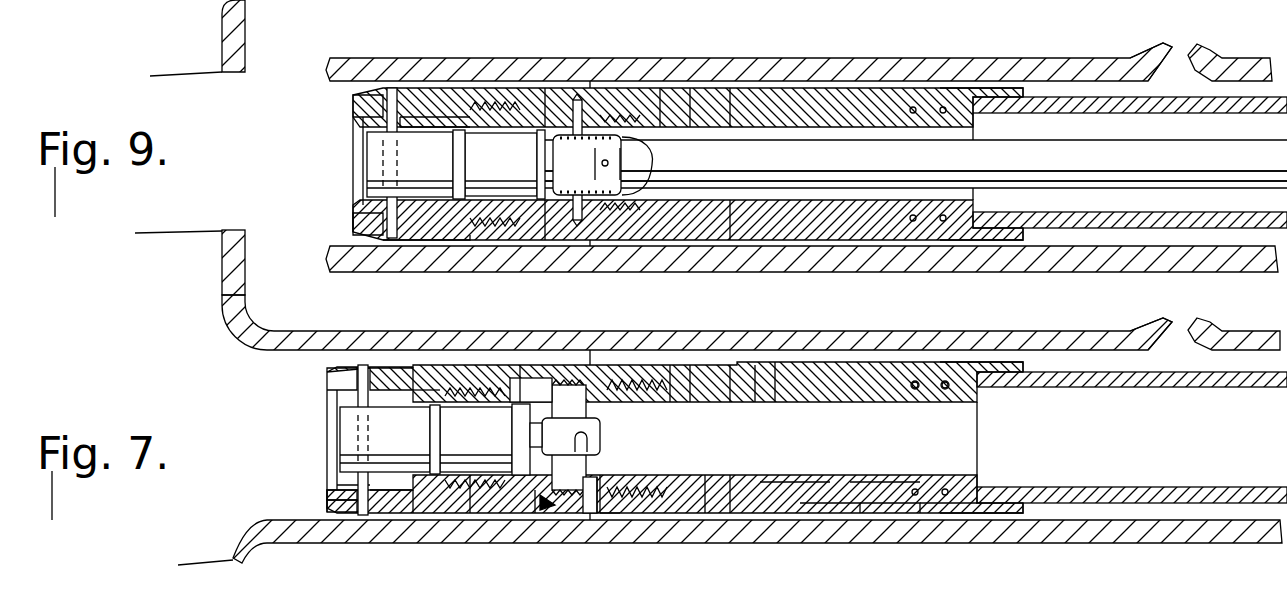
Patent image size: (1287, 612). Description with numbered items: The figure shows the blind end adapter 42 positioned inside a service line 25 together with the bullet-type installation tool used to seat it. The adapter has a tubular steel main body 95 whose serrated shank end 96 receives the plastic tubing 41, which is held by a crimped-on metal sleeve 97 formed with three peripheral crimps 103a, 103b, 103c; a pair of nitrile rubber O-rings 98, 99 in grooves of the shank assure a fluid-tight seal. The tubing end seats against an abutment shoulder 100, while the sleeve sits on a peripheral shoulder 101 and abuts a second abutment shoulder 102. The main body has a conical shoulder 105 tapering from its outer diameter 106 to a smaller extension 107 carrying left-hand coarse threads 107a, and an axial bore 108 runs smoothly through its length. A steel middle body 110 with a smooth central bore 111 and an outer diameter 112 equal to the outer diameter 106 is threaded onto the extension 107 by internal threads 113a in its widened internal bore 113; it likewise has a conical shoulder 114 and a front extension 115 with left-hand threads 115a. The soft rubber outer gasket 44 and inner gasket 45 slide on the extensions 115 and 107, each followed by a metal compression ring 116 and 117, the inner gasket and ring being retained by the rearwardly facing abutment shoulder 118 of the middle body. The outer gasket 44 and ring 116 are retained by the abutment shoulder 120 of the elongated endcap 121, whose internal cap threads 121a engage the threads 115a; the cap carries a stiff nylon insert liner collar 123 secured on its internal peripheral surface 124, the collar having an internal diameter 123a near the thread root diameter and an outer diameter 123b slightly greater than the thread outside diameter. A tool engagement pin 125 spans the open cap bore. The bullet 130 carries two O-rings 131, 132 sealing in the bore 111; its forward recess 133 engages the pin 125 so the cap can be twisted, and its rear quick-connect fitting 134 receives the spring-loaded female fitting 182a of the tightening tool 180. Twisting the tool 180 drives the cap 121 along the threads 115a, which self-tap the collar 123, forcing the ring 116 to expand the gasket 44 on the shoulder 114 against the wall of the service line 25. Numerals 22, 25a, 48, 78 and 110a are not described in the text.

In FIG. 9, the housing wall 22 is at (245, 252).
In FIG. 9, the service line 25 is at (1052, 60).
In FIG. 7, the service line 25 is at (848, 333).
In FIG. 9, the tube end lip 25a is at (1148, 55).
In FIG. 7, the tube end lip 25a is at (1148, 330).
In FIG. 7, the plastic tubing 41 is at (1097, 487).
In FIG. 9, the blind end adapter 42 is at (585, 80).
In FIG. 7, the blind end adapter 42 is at (590, 352).
In FIG. 9, the outer gasket 44 is at (508, 95).
In FIG. 7, the outer gasket 44 is at (478, 368).
In FIG. 9, the inner gasket 45 is at (674, 95).
In FIG. 7, the inner gasket 45 is at (665, 372).
In FIG. 7, the threaded portion 48 is at (614, 365).
In FIG. 7, the ring 78 is at (480, 513).
In FIG. 9, the main body 95 is at (732, 100).
In FIG. 7, the main body 95 is at (732, 497).
In FIG. 7, the serrated shank end 96 is at (882, 475).
In FIG. 9, the metal sleeve 97 is at (957, 88).
In FIG. 7, the metal sleeve 97 is at (992, 365).
In FIG. 7, the O-ring 98 is at (948, 370).
In FIG. 7, the O-ring 99 is at (913, 368).
In FIG. 7, the abutment shoulder 100 is at (772, 368).
In FIG. 7, the peripheral shoulder 101 is at (752, 368).
In FIG. 7, the second abutment shoulder 102 is at (730, 362).
In FIG. 7, the crimp 103a is at (838, 505).
In FIG. 7, the crimp 103b is at (888, 505).
In FIG. 7, the crimp 103c is at (935, 505).
In FIG. 9, the conical shoulder 105 is at (688, 164).
In FIG. 7, the conical shoulder 105 is at (675, 437).
In FIG. 7, the outer diameter 106 is at (702, 498).
In FIG. 9, the extension 107 is at (610, 100).
In FIG. 7, the extension 107 is at (606, 492).
In FIG. 7, the external left-hand coarse machine threads 107a is at (600, 482).
In FIG. 7, the axial bore 108 is at (793, 475).
In FIG. 9, the middle body 110 is at (583, 100).
In FIG. 7, the middle body 110 is at (585, 515).
In FIG. 7, the pin head 110a is at (597, 513).
In FIG. 7, the central bore 111 is at (537, 493).
In FIG. 7, the outer diameter 112 is at (552, 507).
In FIG. 7, the internal bore 113 is at (531, 388).
In FIG. 7, the internal threads 113a is at (568, 378).
In FIG. 9, the conical shoulder 114 is at (560, 100).
In FIG. 7, the conical shoulder 114 is at (528, 365).
In FIG. 9, the front extension 115 is at (455, 128).
In FIG. 7, the front extension 115 is at (440, 368).
In FIG. 9, the external left-hand coarse machine threads 115a is at (472, 116).
In FIG. 7, the external left-hand coarse machine threads 115a is at (428, 368).
In FIG. 9, the compression ring 116 is at (480, 92).
In FIG. 7, the compression ring 116 is at (450, 368).
In FIG. 9, the compression ring 117 is at (652, 98).
In FIG. 7, the compression ring 117 is at (652, 365).
In FIG. 7, the abutment shoulder 118 is at (616, 507).
In FIG. 7, the abutment shoulder 120 is at (440, 513).
In FIG. 9, the endcap 121 is at (355, 100).
In FIG. 7, the endcap 121 is at (415, 515).
In FIG. 9, the internal cap threads 121a is at (456, 240).
In FIG. 7, the internal cap threads 121a is at (413, 365).
In FIG. 9, the insert liner collar 123 is at (355, 218).
In FIG. 7, the insert liner collar 123 is at (327, 492).
In FIG. 7, the internal diameter 123a is at (340, 488).
In FIG. 7, the outer diameter 123b is at (327, 375).
In FIG. 7, the internal peripheral surface 124 is at (327, 507).
In FIG. 9, the tool engagement pin 125 is at (398, 3).
In FIG. 7, the tool engagement pin 125 is at (360, 515).
In FIG. 9, the installation tool 130 is at (510, 173).
In FIG. 7, the installation tool 130 is at (410, 446).
In FIG. 9, the O-ring 131 is at (458, 146).
In FIG. 7, the O-ring 131 is at (440, 424).
In FIG. 9, the O-ring 132 is at (530, 180).
In FIG. 7, the O-ring 132 is at (512, 443).
In FIG. 9, the recess 133 is at (367, 165).
In FIG. 7, the recess 133 is at (340, 433).
In FIG. 9, the quick-connect fitting 134 is at (622, 170).
In FIG. 7, the quick-connect fitting 134 is at (604, 420).
In FIG. 9, the tightening tool 180 is at (1130, 170).
In FIG. 9, the female quick-connect fitting 182a is at (652, 150).